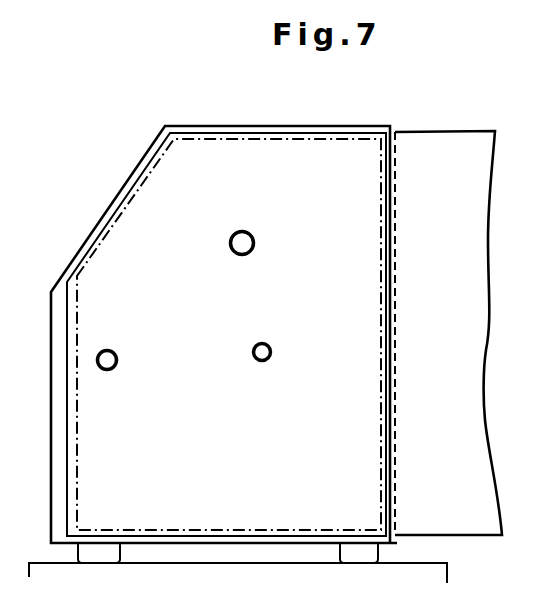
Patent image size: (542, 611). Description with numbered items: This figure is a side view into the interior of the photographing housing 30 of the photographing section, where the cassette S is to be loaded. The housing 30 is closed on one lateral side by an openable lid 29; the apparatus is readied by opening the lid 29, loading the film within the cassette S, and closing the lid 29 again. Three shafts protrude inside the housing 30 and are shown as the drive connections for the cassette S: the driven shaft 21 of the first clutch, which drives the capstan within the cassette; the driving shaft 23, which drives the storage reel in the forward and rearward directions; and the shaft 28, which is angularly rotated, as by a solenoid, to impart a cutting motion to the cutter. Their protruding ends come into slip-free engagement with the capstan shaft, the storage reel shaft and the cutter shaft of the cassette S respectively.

The cassette S is at (105, 232).
The photographing housing 30 is at (230, 160).
The lid 29 is at (452, 150).
The storage reel driving shaft 23 is at (255, 243).
The driven shaft of the first clutch 21 is at (118, 362).
The cutter shaft 28 is at (272, 352).